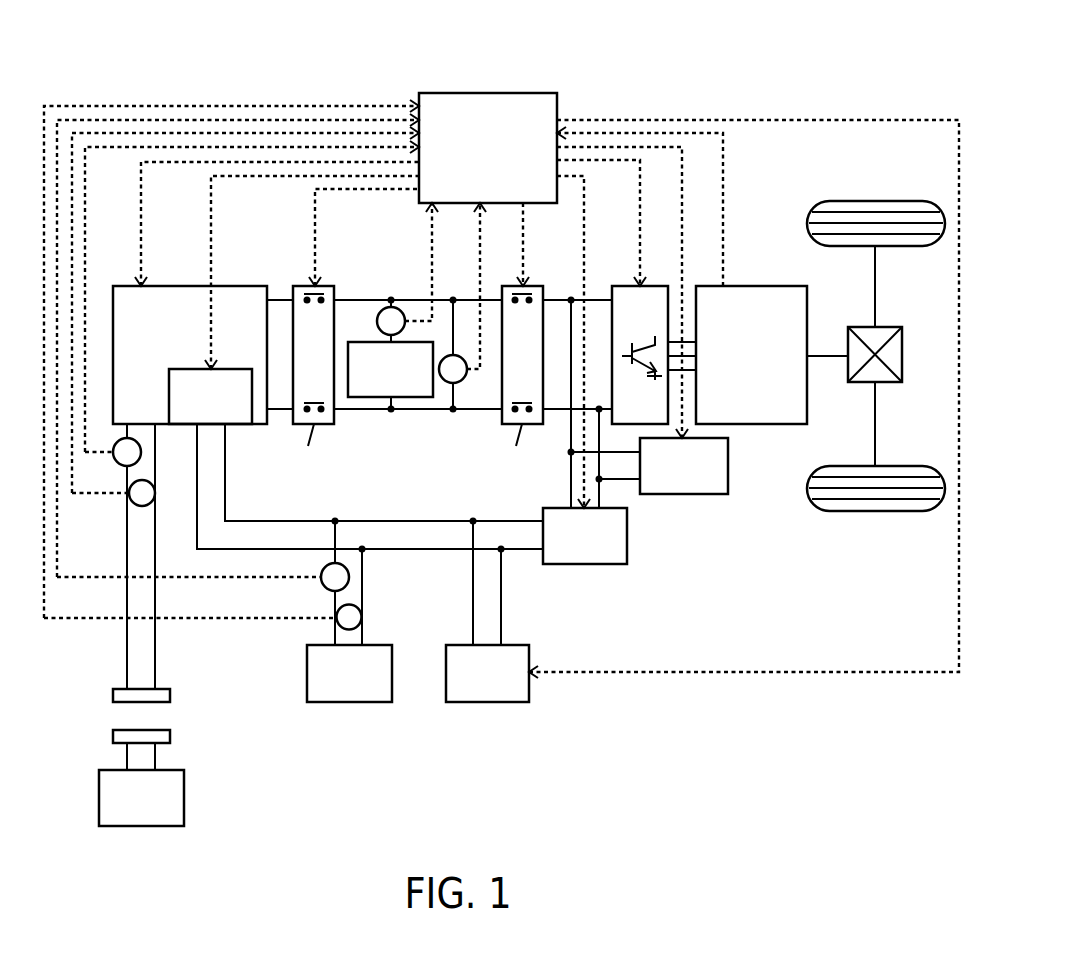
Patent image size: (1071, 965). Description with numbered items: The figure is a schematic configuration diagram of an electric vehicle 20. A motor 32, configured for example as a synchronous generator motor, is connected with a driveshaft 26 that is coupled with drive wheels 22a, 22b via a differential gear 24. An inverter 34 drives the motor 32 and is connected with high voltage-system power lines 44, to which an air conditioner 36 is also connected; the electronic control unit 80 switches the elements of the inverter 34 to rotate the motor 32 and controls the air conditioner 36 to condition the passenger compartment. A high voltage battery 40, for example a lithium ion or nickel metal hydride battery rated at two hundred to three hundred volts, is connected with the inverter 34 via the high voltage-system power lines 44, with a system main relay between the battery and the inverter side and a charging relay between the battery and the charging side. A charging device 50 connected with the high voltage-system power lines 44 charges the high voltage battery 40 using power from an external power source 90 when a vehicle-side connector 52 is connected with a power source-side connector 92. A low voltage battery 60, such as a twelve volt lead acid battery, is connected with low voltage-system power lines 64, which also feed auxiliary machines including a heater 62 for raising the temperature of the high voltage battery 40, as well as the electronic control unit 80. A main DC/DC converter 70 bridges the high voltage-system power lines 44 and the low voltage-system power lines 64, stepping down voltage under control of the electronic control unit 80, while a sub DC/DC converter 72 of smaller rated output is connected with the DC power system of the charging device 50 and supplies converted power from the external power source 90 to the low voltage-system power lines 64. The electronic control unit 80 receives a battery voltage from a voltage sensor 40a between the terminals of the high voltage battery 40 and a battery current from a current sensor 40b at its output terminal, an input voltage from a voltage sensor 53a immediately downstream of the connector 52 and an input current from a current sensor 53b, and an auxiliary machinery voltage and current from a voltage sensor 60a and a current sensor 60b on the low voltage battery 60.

The electric vehicle 20 is at (703, 57).
The drive wheel 22a is at (875, 201).
The drive wheel 22b is at (875, 511).
The differential gear 24 is at (890, 327).
The driveshaft 26 is at (822, 354).
The motor 32 is at (752, 286).
The inverter 34 is at (655, 286).
The air conditioner 36 is at (728, 466).
The high voltage battery 40 is at (377, 397).
The voltage sensor 40a is at (448, 383).
The current sensor 40b is at (398, 307).
The high voltage-system power lines 44 is at (488, 300).
The charging device 50 is at (183, 286).
The vehicle-side connector 52 is at (170, 695).
The voltage sensor 53a is at (138, 505).
The current sensor 53b is at (141, 452).
The low voltage battery 60 is at (350, 702).
The voltage sensor 60a is at (362, 617).
The current sensor 60b is at (349, 577).
The heater 62 is at (485, 702).
The low voltage-system power lines 64 is at (395, 548).
The main DC/DC converter 70 is at (585, 564).
The sub DC/DC converter 72 is at (238, 369).
The electronic control unit 80 is at (503, 93).
The external power source 90 is at (184, 797).
The power source-side connector 92 is at (170, 736).